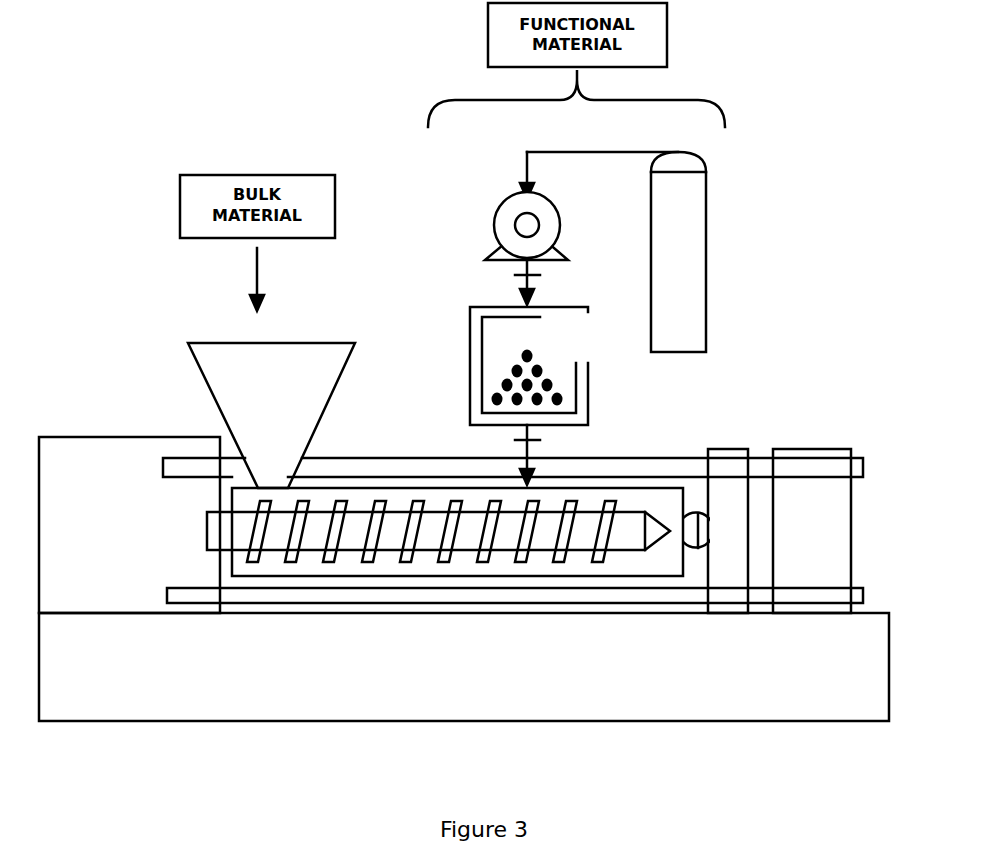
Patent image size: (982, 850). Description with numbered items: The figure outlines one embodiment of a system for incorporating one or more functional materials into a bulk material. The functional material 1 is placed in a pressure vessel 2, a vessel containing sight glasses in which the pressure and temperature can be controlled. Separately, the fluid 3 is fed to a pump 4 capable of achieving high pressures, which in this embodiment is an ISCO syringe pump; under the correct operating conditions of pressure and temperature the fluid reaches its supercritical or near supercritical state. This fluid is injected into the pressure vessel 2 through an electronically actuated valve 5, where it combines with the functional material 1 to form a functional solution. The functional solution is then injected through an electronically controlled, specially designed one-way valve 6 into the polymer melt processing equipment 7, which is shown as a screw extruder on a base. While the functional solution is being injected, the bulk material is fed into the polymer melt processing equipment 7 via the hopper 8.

The functional material 1 is at (537, 362).
The pressure vessel 2 is at (505, 362).
The fluid 3 is at (637, 252).
The pump 4 is at (513, 221).
The electronically actuated valve 5 is at (546, 282).
The one-way valve 6 is at (546, 455).
The polymer melt processing equipment 7 is at (464, 579).
The hopper 8 is at (253, 399).